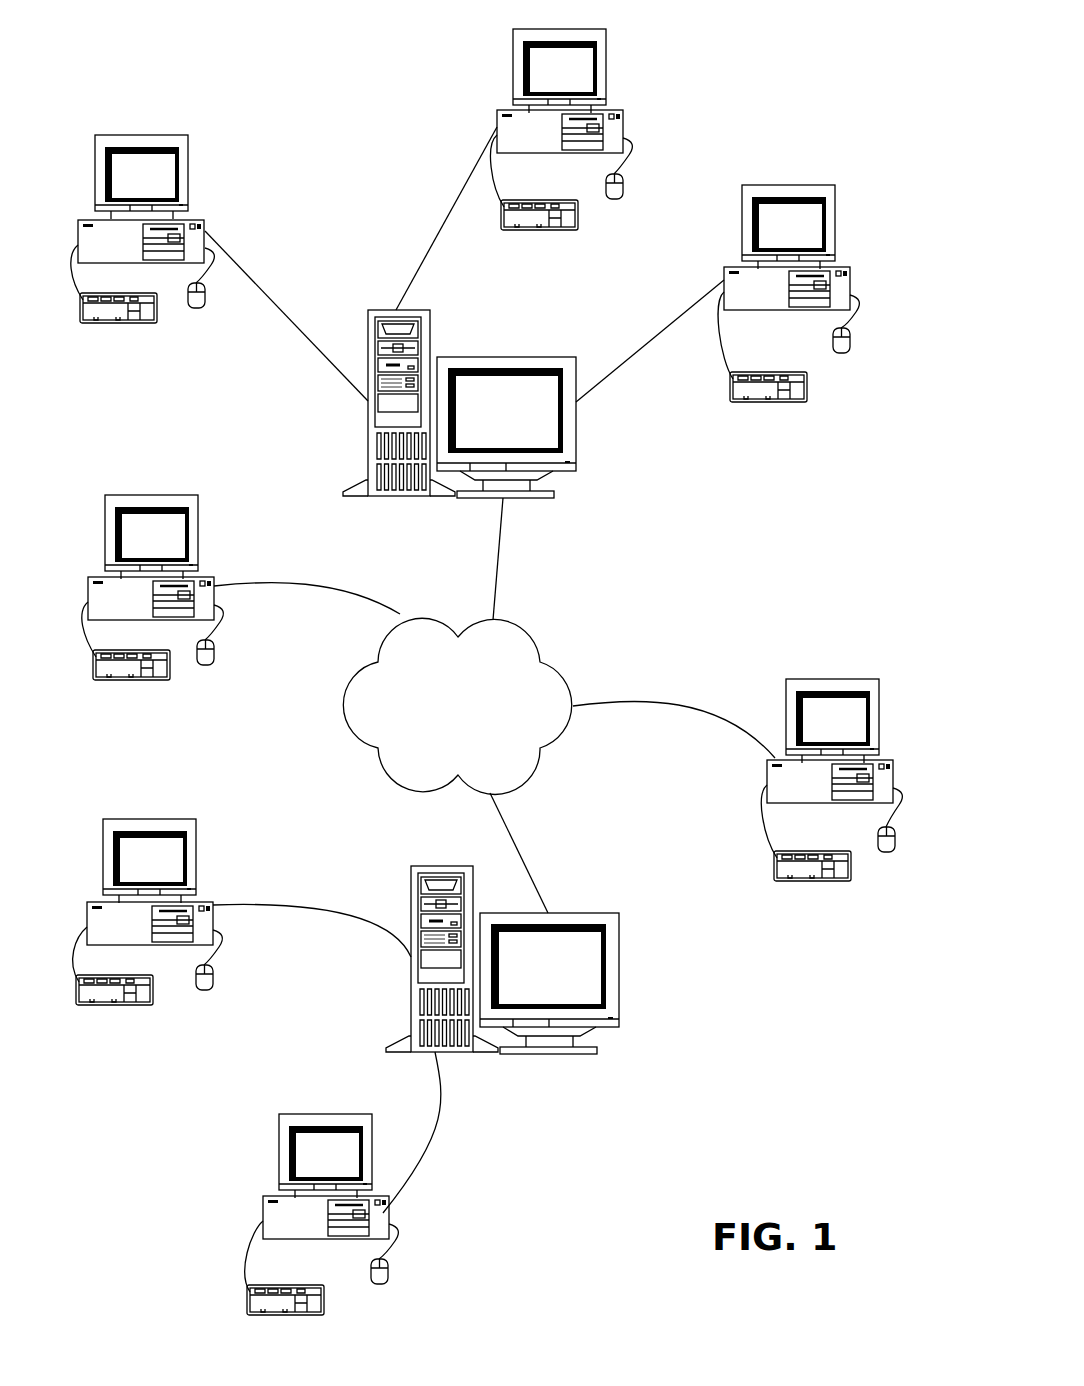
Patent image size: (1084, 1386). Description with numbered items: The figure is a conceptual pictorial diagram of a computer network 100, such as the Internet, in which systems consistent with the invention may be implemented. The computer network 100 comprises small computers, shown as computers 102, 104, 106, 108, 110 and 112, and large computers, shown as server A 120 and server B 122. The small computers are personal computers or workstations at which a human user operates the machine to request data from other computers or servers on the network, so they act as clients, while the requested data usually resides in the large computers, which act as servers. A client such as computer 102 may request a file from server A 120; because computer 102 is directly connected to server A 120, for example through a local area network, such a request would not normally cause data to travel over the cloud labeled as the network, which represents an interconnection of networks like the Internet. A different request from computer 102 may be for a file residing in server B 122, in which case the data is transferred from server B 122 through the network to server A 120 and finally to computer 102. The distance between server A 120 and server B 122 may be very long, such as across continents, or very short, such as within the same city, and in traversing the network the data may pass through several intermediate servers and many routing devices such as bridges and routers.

The computer network 100 is at (702, 150).
The computer 102 is at (838, 267).
The computer 104 is at (615, 110).
The computer 106 is at (203, 220).
The computer 108 is at (852, 679).
The computer 110 is at (117, 819).
The computer 112 is at (298, 1114).
The server A 120 is at (576, 430).
The server B 122 is at (620, 960).